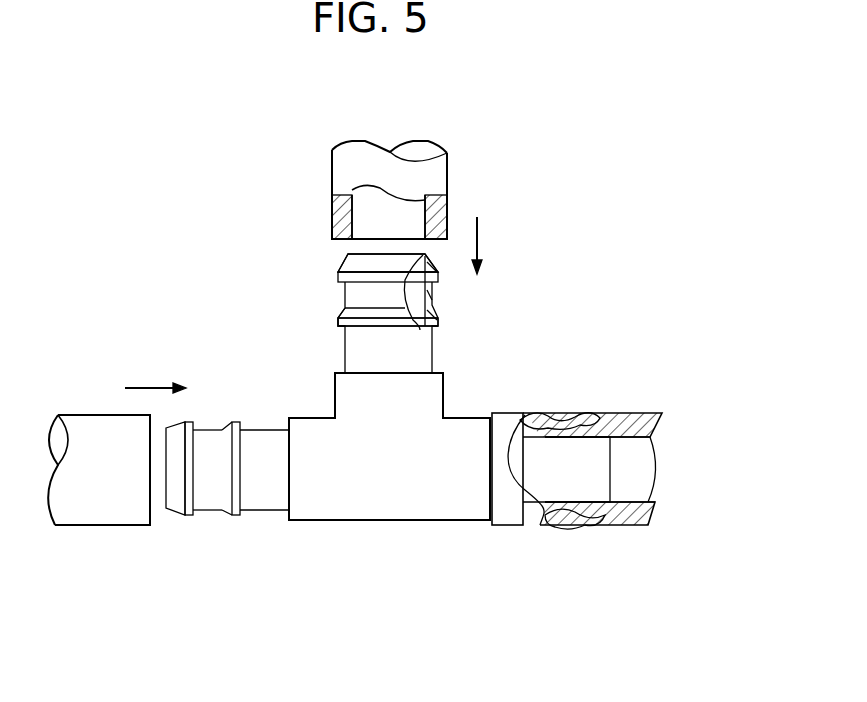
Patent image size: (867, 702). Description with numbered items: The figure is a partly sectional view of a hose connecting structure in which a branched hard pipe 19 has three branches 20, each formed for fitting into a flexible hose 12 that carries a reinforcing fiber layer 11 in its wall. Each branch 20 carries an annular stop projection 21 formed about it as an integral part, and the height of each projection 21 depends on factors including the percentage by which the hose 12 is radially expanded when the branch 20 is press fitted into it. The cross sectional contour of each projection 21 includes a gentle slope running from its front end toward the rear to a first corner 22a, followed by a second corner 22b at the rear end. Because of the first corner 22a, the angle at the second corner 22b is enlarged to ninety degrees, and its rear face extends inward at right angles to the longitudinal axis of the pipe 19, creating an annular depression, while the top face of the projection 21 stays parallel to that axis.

The reinforcing fiber layer 11 is at (448, 202).
The flexible hose 12 is at (435, 177).
The branched hard pipe 19 is at (390, 505).
The branch 20 is at (440, 285).
The annular stop projection 21 is at (440, 313).
The first corner 22a is at (338, 317).
The second corner 22b is at (343, 322).